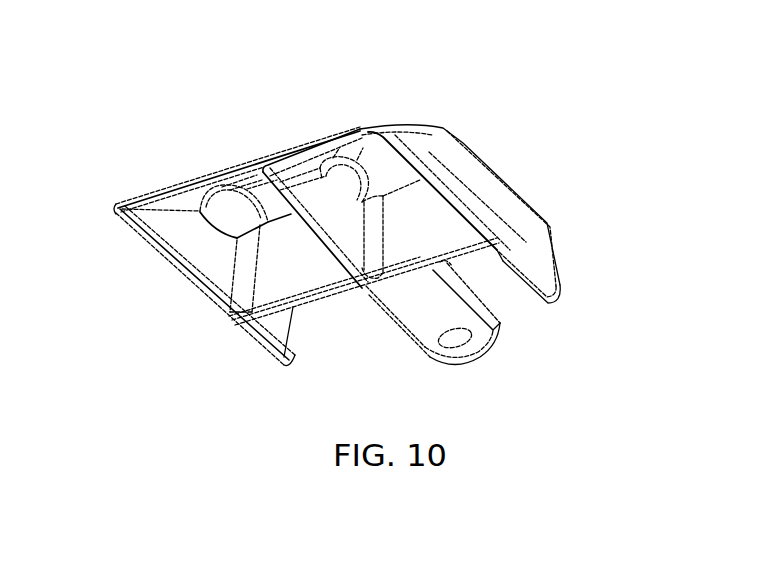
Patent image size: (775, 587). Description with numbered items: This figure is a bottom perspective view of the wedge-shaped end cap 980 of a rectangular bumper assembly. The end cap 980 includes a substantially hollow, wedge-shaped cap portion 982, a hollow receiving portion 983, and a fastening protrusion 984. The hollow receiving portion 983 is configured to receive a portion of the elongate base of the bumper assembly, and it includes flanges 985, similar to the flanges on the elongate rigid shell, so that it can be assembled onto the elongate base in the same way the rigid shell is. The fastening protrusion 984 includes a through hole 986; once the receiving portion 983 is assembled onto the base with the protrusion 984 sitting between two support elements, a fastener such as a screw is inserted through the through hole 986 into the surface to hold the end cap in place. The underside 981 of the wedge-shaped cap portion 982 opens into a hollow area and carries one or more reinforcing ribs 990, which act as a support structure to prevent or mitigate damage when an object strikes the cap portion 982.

The wedge-shaped end cap 980 is at (547, 171).
The underside 981 is at (280, 140).
The wedge-shaped cap portion 982 is at (427, 124).
The hollow receiving portion 983 is at (247, 328).
The fastening protrusion 984 is at (490, 350).
The flanges 985 is at (286, 356).
The through hole 986 is at (457, 338).
The reinforcing ribs 990 is at (268, 198).